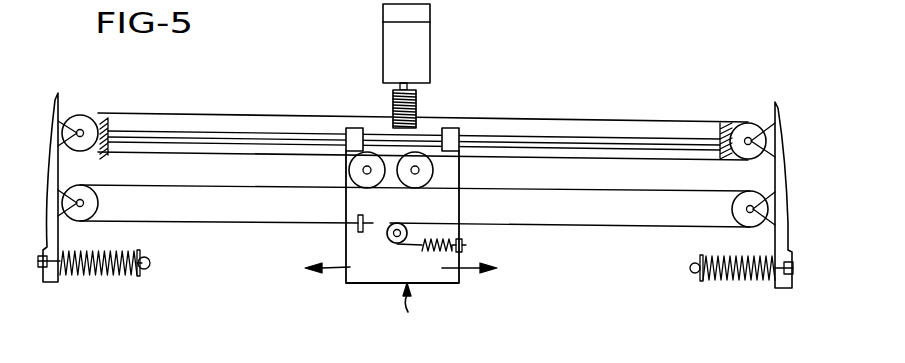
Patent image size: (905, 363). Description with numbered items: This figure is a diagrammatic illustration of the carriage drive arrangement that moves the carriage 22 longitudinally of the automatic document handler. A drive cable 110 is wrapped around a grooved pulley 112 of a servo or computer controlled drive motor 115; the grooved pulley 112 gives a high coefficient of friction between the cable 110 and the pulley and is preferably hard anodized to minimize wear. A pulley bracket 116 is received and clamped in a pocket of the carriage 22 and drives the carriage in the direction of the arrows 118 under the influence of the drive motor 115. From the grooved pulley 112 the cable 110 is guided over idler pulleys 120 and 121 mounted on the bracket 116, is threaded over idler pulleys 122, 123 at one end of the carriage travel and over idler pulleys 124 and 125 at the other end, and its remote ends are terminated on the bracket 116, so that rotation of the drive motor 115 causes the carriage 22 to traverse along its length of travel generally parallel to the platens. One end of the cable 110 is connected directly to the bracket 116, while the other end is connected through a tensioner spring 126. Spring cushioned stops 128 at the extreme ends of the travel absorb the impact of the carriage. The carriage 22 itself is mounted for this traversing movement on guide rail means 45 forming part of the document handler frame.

The carriage 22 is at (408, 315).
The guide rail means 45 is at (565, 140).
The drive cable 110 is at (283, 115).
The grooved pulley 112 is at (416, 103).
The servo drive motor 115 is at (388, 48).
The pulley bracket 116 is at (378, 267).
The arrows 118 is at (330, 270).
The idler pulley 120 is at (428, 168).
The idler pulley 121 is at (355, 175).
The idler pulley 122 is at (750, 123).
The idler pulley 123 is at (743, 212).
The idler pulley 124 is at (78, 117).
The idler pulley 125 is at (93, 202).
The tensioner spring 126 is at (428, 253).
The spring cushioned stops 128 is at (149, 267).